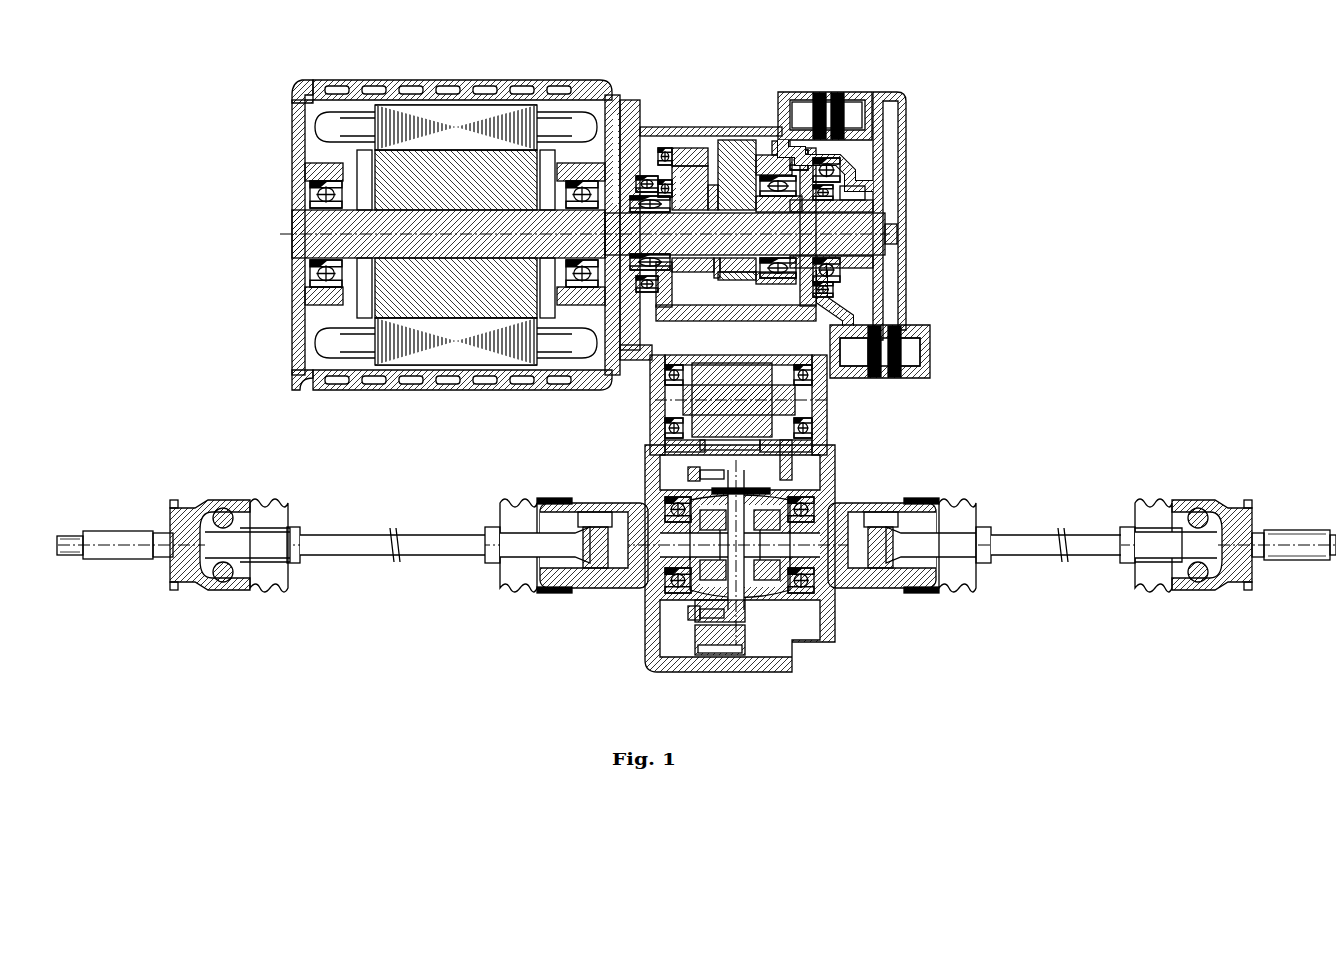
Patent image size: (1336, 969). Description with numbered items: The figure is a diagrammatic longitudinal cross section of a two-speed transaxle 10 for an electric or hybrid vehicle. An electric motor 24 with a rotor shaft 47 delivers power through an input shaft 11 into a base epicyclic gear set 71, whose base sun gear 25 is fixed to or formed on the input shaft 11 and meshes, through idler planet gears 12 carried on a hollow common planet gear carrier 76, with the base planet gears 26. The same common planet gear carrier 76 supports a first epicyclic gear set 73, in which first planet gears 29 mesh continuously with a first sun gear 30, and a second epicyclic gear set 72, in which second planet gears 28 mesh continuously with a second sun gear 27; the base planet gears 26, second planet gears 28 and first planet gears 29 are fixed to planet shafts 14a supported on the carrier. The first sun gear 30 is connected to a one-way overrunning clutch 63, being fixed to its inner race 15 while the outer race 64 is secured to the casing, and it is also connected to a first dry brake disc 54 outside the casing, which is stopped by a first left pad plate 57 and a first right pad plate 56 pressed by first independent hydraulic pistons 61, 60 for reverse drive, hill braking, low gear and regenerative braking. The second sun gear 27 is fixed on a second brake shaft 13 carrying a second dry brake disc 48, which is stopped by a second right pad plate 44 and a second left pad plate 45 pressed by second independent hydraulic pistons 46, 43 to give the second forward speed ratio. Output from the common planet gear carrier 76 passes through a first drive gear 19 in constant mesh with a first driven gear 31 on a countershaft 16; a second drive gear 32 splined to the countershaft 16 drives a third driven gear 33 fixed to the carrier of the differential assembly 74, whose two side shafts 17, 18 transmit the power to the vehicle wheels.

The two-speed transaxle 10 is at (281, 71).
The electric motor 24 is at (348, 80).
The input shaft 11 is at (608, 210).
The rotor shaft 47 is at (293, 223).
The base sun gear 25 is at (663, 148).
The idler planet gears 12 is at (676, 188).
The base planet gears 26 is at (690, 148).
The second sun gear 27 is at (714, 188).
The second planet gears 28 is at (752, 140).
The first planet gears 29 is at (768, 155).
The first drive gear 19 is at (785, 150).
The first independent hydraulic piston 61 is at (794, 94).
The first dry brake disc 54 is at (830, 94).
The first left pad plate 57 is at (820, 98).
The first right pad plate 56 is at (838, 98).
The first independent hydraulic piston 60 is at (870, 92).
The planet shafts 14a is at (845, 185).
The outer race 64 is at (872, 184).
The inner race 15 is at (868, 205).
The second brake shaft 13 is at (864, 229).
The one-way overrunning clutch 63 is at (862, 265).
The second right pad plate 44 is at (903, 327).
The second independent hydraulic piston 43 is at (920, 330).
The second left pad plate 45 is at (870, 340).
The second independent hydraulic piston 46 is at (854, 370).
The second dry brake disc 48 is at (880, 372).
The base epicyclic gear set 71 is at (703, 278).
The second epicyclic gear set 72 is at (745, 280).
The first sun gear 30 is at (783, 284).
The common planet gear carrier 76 is at (690, 321).
The first epicyclic gear set 73 is at (762, 299).
The countershaft 16 is at (658, 395).
The second drive gear 32 is at (732, 362).
The first driven gear 31 is at (787, 476).
The differential assembly 74 is at (756, 483).
The third driven gear 33 is at (735, 648).
The side shaft 17 is at (435, 535).
The side shaft 18 is at (1043, 533).